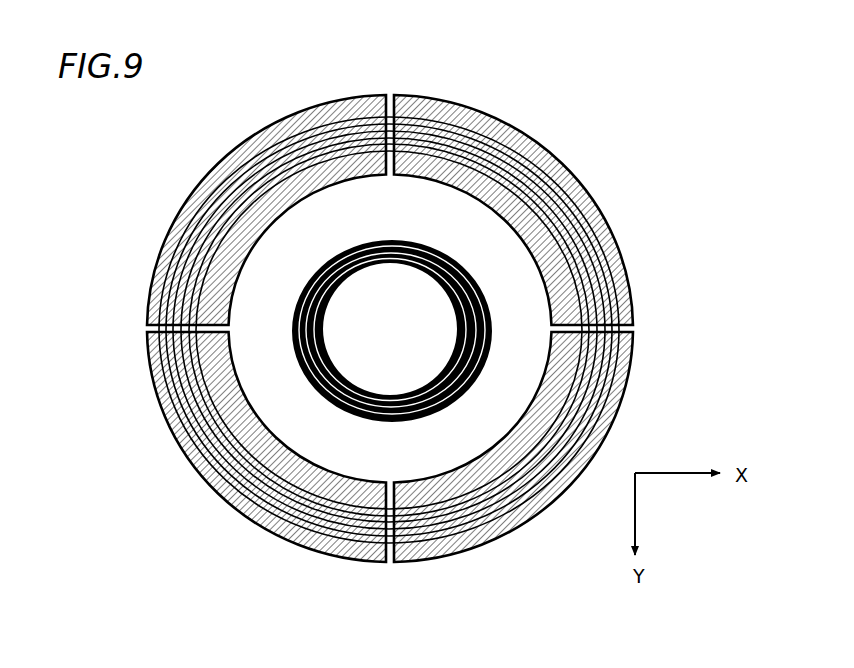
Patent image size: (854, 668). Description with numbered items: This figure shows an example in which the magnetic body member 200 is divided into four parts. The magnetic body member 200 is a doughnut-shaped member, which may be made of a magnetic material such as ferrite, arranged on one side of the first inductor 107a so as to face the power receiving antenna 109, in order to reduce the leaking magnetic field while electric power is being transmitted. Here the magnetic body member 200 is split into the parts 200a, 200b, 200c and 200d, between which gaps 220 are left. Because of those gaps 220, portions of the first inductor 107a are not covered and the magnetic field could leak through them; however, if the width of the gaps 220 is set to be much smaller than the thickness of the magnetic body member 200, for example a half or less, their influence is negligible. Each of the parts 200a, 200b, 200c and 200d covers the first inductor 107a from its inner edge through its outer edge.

The magnetic body member 200 is at (396, 344).
The part of the magnetic body member 200a is at (606, 219).
The part of the magnetic body member 200b is at (508, 535).
The part of the magnetic body member 200c is at (175, 433).
The part of the magnetic body member 200d is at (203, 177).
The gap 220 is at (390, 92).
The first inductor 107a is at (285, 533).
The power receiving antenna 109 is at (423, 272).